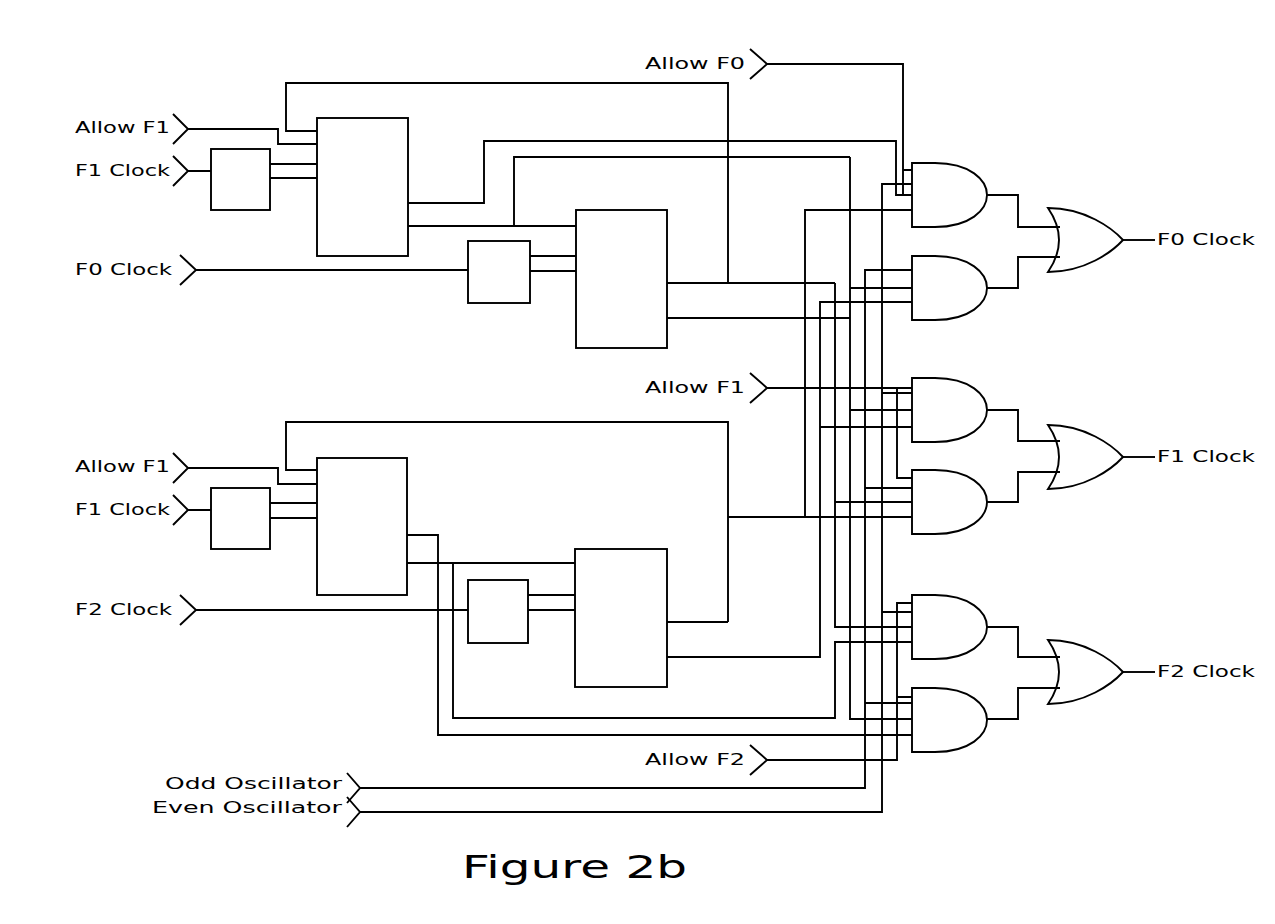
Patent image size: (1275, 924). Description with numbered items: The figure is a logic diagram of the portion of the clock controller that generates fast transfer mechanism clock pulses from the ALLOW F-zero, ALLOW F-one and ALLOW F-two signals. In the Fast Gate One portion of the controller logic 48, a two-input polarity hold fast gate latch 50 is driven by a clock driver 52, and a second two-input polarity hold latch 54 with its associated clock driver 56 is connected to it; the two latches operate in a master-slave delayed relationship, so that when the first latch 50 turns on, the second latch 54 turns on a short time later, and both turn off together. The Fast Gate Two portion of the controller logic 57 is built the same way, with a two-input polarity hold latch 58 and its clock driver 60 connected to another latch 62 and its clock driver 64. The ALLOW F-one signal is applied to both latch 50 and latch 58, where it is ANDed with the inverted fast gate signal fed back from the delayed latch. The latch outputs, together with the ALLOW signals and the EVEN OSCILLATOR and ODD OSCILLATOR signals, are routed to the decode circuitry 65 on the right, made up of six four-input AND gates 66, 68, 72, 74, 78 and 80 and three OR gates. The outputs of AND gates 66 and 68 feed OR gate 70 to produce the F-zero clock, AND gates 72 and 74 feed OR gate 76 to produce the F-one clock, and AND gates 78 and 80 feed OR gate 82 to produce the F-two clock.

The Fast Gate 1 portion of the controller logic 48 is at (471, 92).
The two-input polarity hold fast gate latch 50 is at (372, 232).
The clock driver 52 is at (220, 210).
The two-input polarity hold latch 54 is at (630, 324).
The clock driver 56 is at (478, 303).
The Fast Gate 2 portion of the controller logic 57 is at (491, 439).
The two-input polarity hold latch 58 is at (372, 571).
The clock driver 60 is at (220, 549).
The two-input polarity hold latch 62 is at (632, 654).
The clock driver 64 is at (478, 643).
The decode circuitry 65 is at (1034, 131).
The four-input AND gate 66 is at (952, 207).
The four-input AND gate 68 is at (952, 300).
The OR gate 70 is at (1105, 251).
The four-input AND gate 72 is at (952, 422).
The four-input AND gate 74 is at (952, 514).
The OR gate 76 is at (1105, 468).
The four-input AND gate 78 is at (952, 639).
The four-input AND gate 80 is at (952, 732).
The OR gate 82 is at (1105, 683).